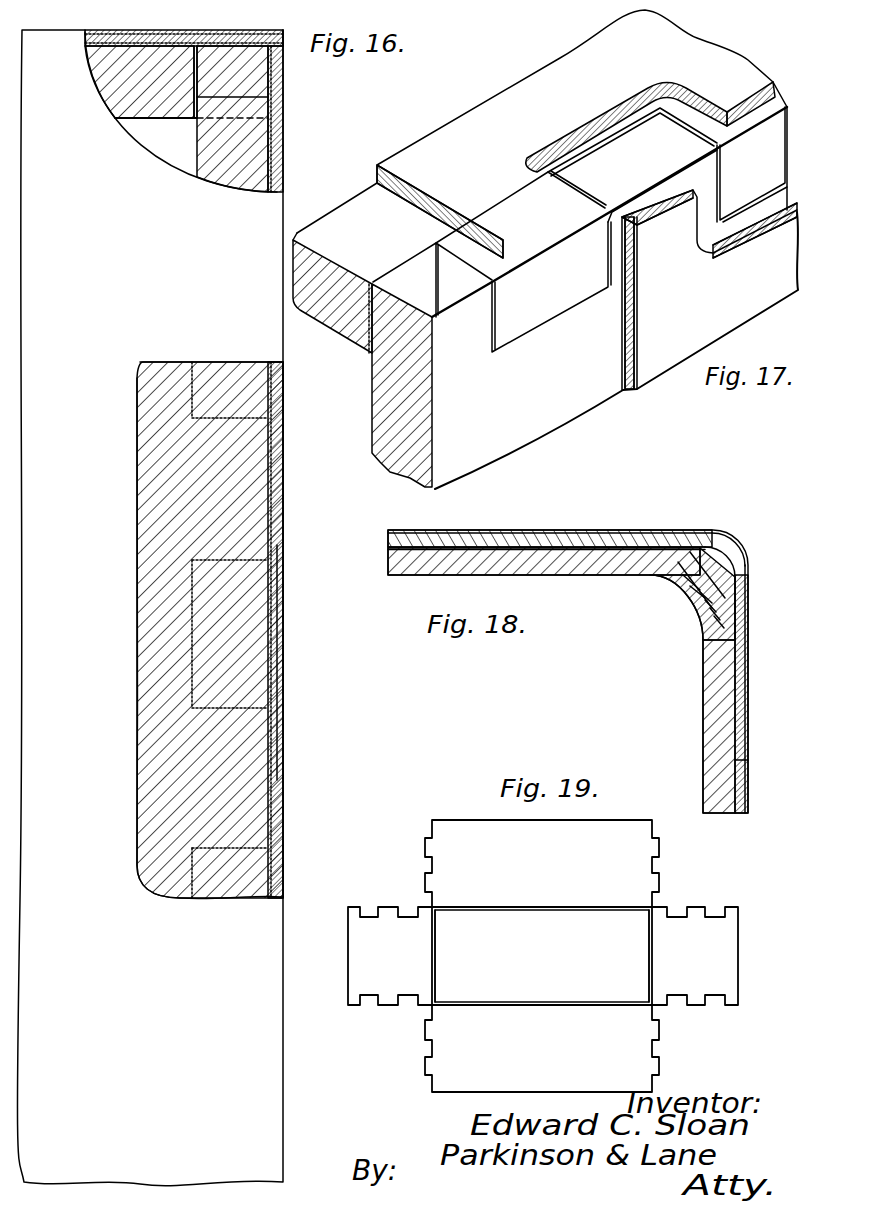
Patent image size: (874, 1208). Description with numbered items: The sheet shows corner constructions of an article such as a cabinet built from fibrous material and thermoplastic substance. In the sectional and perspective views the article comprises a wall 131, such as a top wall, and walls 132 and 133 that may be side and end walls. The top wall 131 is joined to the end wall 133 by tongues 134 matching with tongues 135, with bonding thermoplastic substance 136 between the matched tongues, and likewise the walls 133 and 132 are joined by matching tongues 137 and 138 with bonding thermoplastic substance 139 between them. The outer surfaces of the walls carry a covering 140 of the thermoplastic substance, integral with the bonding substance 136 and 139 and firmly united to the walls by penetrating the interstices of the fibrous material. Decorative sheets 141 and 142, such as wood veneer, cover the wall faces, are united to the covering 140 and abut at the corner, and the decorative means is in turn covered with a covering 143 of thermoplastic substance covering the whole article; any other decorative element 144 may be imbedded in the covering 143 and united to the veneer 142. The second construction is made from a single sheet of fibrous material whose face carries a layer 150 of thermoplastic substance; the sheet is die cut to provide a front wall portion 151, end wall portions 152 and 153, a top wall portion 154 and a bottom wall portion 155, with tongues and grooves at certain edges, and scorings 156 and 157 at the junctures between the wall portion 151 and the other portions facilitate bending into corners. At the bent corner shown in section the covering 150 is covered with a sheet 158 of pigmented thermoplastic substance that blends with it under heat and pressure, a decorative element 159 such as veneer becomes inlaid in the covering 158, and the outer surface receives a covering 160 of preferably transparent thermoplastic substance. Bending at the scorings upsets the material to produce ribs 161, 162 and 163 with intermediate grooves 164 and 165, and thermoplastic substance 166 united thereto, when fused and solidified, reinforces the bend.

In FIG. 16, the wall 131 is at (255, 217).
In FIG. 17, the wall 131 is at (370, 207).
In FIG. 16, the wall 132 is at (143, 103).
In FIG. 16, the wall 133 is at (273, 134).
In FIG. 17, the wall 133 is at (398, 462).
In FIG. 16, the tongues 134 is at (240, 512).
In FIG. 17, the tongues 134 is at (560, 300).
In FIG. 16, the tongues 135 is at (200, 612).
In FIG. 17, the tongues 135 is at (612, 190).
In FIG. 16, the bonding thermoplastic substance 136 is at (258, 560).
In FIG. 17, the bonding thermoplastic substance 136 is at (670, 125).
In FIG. 16, the tongues 137 is at (233, 97).
In FIG. 16, the tongues 138 is at (291, 34).
In FIG. 16, the bonding thermoplastic substance 139 is at (227, 110).
In FIG. 16, the covering 140 is at (178, 40).
In FIG. 17, the covering 140 is at (628, 100).
In FIG. 16, the decorative sheet 141 is at (127, 40).
In FIG. 17, the decorative sheet 141 is at (595, 118).
In FIG. 16, the decorative sheet 142 is at (235, 117).
In FIG. 17, the decorative sheet 142 is at (632, 392).
In FIG. 16, the covering 143 is at (245, 40).
In FIG. 17, the covering 143 is at (498, 105).
In FIG. 16, the decorative element 144 is at (284, 682).
In FIG. 18, the layer or sheet 150 is at (749, 638).
In FIG. 19, the wall portion 151 is at (630, 977).
In FIG. 19, the wall portion 152 is at (380, 987).
In FIG. 19, the wall portion 153 is at (723, 977).
In FIG. 18, the wall portion 154 is at (525, 578).
In FIG. 19, the wall portion 154 is at (632, 833).
In FIG. 18, the wall portion 155 is at (715, 755).
In FIG. 19, the wall portion 155 is at (633, 1067).
In FIG. 18, the scorings 156 is at (690, 552).
In FIG. 19, the scorings 156 is at (572, 918).
In FIG. 18, the scorings 157 is at (710, 585).
In FIG. 19, the scorings 157 is at (552, 926).
In FIG. 18, the sheet of pigmented thermoplastic substance 158 is at (749, 760).
In FIG. 18, the decorative element 159 is at (648, 545).
In FIG. 18, the covering 160 is at (730, 545).
In FIG. 18, the rib 161 is at (683, 578).
In FIG. 18, the rib 162 is at (705, 602).
In FIG. 18, the rib 163 is at (714, 620).
In FIG. 18, the groove 164 is at (690, 587).
In FIG. 18, the groove 165 is at (710, 610).
In FIG. 18, the thermoplastic substance 166 is at (700, 593).